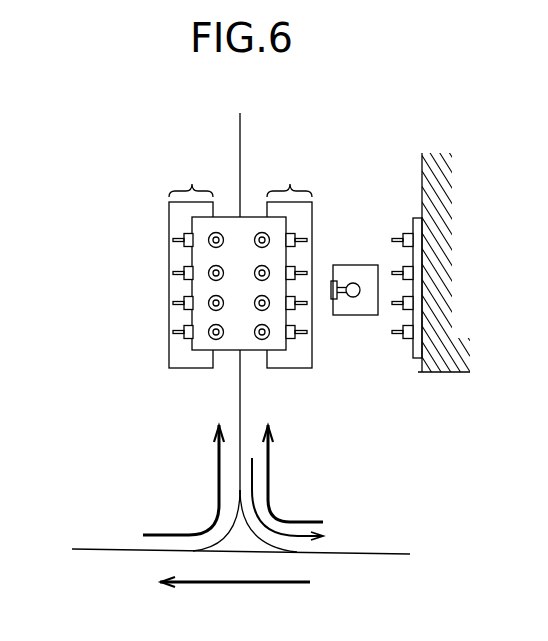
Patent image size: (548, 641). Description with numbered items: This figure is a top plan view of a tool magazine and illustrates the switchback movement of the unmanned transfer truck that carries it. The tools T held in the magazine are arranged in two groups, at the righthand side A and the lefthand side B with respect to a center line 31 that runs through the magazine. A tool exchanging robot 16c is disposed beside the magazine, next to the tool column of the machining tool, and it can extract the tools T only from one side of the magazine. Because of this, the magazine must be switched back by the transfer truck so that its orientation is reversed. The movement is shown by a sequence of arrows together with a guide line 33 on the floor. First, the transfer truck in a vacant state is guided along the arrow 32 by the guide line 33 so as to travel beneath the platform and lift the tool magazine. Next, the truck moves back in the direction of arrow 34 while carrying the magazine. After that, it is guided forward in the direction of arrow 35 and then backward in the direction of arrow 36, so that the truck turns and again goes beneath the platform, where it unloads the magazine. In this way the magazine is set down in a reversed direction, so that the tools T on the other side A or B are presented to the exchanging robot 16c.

The center line 31 is at (242, 140).
The arrow 32 is at (268, 485).
The guide line 33 is at (233, 552).
The arrow 34 is at (300, 532).
The arrow 35 is at (207, 582).
The arrow 36 is at (217, 480).
The tool exchanging robot 16c is at (353, 283).
The tools T is at (173, 243).
The righthand side A is at (289, 263).
The lefthand side B is at (191, 263).